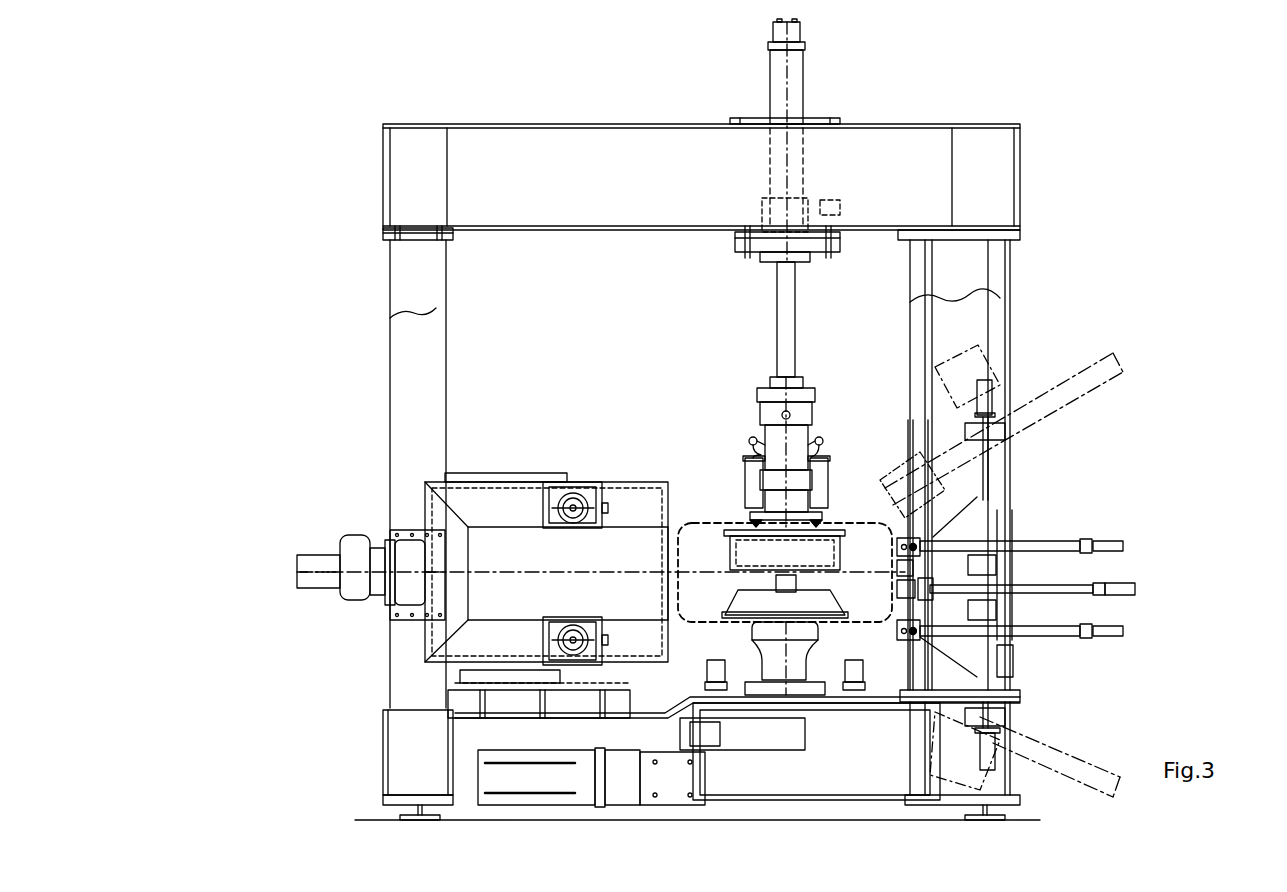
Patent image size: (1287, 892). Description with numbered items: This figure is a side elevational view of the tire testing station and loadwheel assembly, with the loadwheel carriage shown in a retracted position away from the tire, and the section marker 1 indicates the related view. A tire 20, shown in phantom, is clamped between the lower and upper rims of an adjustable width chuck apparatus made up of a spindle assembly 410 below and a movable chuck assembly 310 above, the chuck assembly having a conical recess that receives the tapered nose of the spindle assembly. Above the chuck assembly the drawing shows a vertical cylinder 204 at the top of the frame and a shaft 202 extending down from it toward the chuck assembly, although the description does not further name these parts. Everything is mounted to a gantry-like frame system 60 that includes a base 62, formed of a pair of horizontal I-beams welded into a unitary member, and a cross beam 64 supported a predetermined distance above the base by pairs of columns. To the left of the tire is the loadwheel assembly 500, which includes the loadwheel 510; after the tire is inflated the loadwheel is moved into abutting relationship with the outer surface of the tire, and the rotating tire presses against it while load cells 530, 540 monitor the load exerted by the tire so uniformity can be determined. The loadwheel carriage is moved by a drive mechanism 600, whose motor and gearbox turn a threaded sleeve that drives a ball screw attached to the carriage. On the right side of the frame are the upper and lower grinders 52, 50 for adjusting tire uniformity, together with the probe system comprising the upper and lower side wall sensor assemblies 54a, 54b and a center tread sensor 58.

The frame system 60 is at (1050, 203).
The cross beam 64 is at (540, 122).
The hydraulic cylinder 204 is at (810, 103).
The ram shaft 202 is at (791, 327).
The chuck assembly 310 is at (824, 438).
The tire 20 is at (852, 520).
The spindle assembly 410 is at (816, 655).
The base 62 is at (745, 825).
The loadwheel assembly 500 is at (632, 517).
The loadwheel 510 is at (585, 566).
The load cell 530 is at (578, 497).
The load cell 540 is at (578, 642).
The drive mechanism 600 is at (336, 535).
The grinder 52 is at (1058, 382).
The grinder 50 is at (1052, 739).
The upper side wall sensor assembly 54a is at (1110, 545).
The center tread sensor 58 is at (1125, 592).
The lower side wall sensor assembly 54b is at (1108, 636).
The section line 1- 1 is at (342, 272).